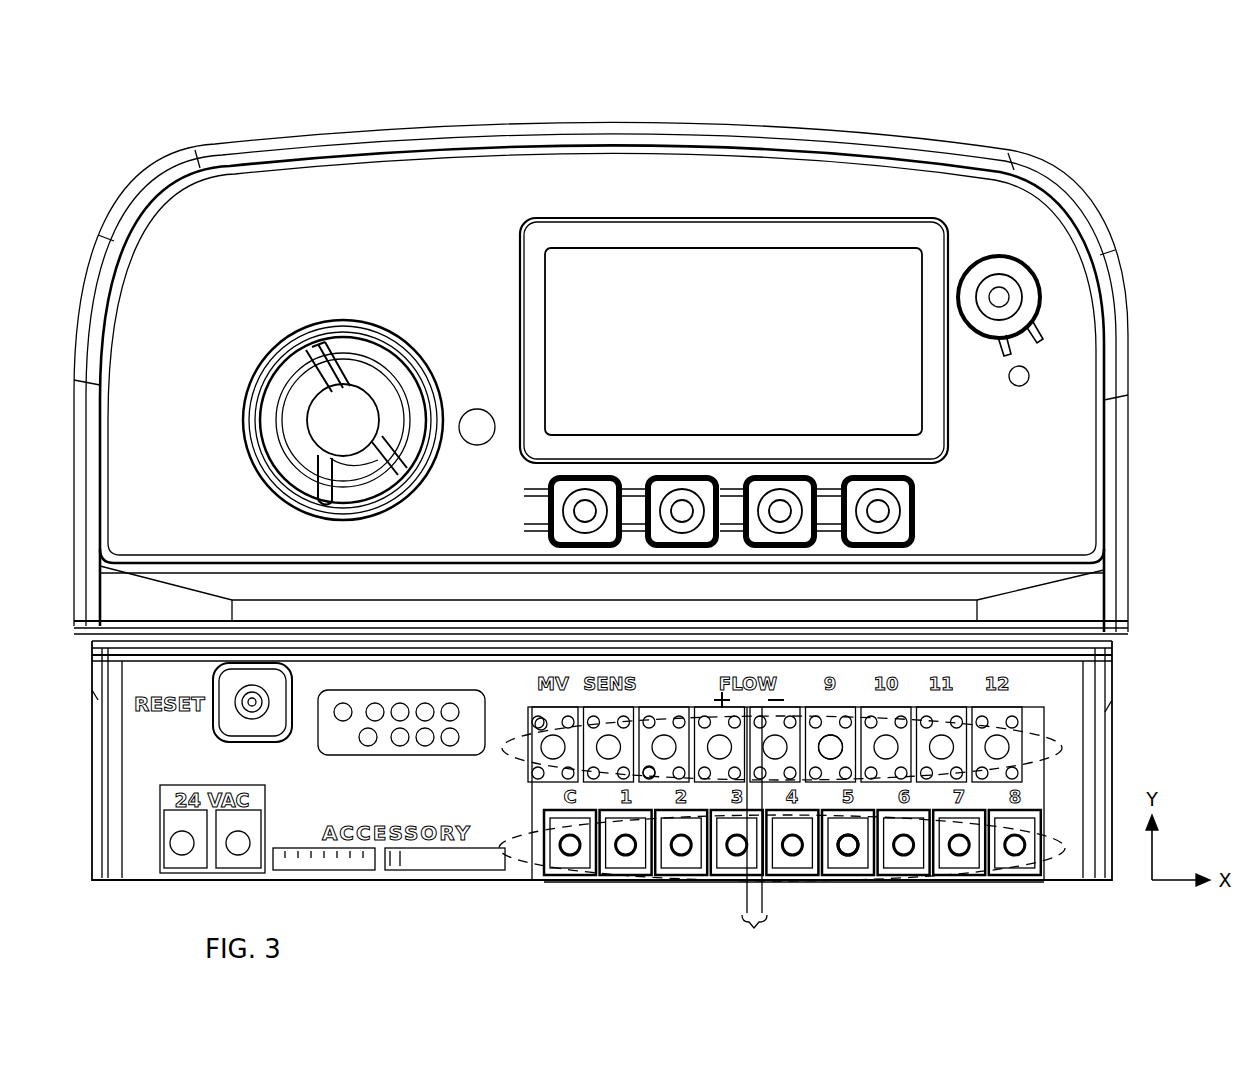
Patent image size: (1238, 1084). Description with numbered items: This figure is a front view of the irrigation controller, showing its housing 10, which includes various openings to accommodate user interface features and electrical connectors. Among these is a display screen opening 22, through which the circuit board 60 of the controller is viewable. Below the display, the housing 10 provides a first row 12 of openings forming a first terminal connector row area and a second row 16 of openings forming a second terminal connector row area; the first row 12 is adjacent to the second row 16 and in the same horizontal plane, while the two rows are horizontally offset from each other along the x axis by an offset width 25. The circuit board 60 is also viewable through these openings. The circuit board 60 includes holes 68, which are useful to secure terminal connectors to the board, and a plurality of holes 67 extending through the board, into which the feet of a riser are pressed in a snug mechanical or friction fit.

The housing 10 is at (601, 501).
The display screen opening 22 is at (703, 242).
The circuit board 60 is at (787, 290).
The holes 67 is at (541, 724).
The second row 16 is at (1057, 733).
The first row 12 is at (1057, 833).
The offset width 25 is at (754, 835).
The holes 68 is at (834, 750).